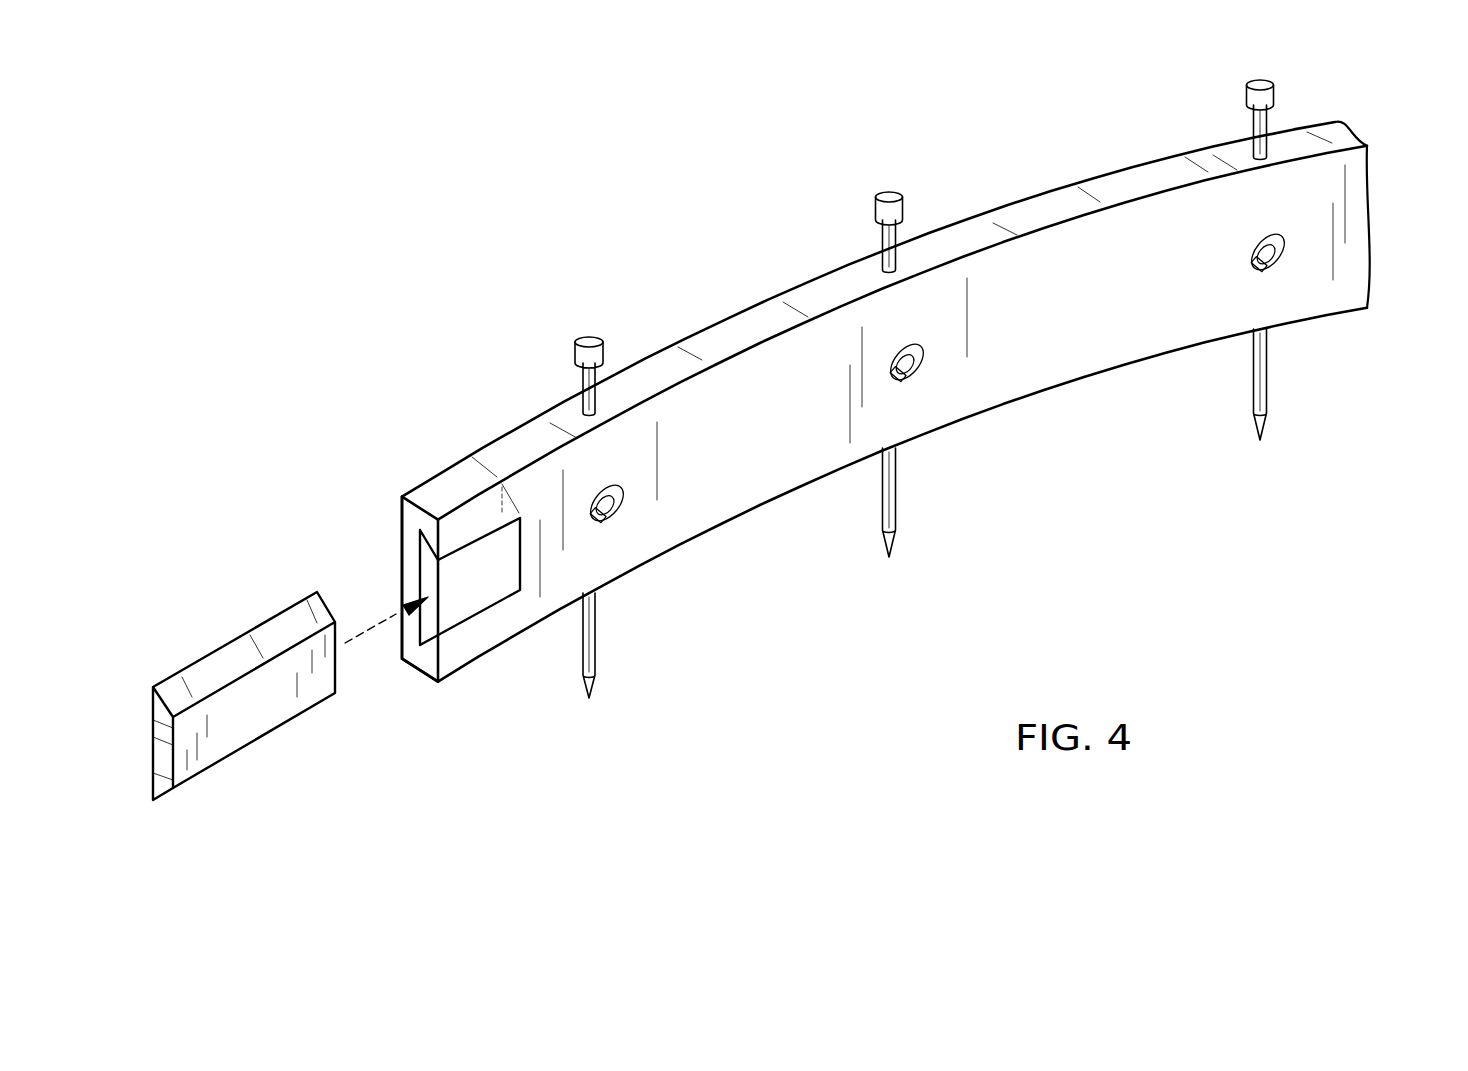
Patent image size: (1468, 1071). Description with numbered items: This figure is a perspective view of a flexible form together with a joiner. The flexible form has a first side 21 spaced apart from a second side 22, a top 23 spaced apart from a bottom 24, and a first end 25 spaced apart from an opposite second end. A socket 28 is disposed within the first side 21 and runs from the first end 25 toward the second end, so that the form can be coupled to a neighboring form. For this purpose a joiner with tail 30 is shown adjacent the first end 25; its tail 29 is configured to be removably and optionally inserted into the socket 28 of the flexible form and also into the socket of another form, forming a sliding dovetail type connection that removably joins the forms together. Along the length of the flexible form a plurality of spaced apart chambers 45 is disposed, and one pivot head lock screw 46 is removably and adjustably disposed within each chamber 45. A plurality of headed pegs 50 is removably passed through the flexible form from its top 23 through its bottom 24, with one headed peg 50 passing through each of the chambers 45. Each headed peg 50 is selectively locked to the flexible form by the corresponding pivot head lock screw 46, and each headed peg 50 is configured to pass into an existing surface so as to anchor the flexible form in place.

The first side 21 is at (1147, 359).
The second side 22 is at (477, 452).
The top 23 is at (1040, 195).
The bottom 24 is at (810, 483).
The first end 25 is at (412, 517).
The socket 28 is at (432, 578).
The tail 29 is at (147, 708).
The joiner with tail 30 is at (240, 637).
The chamber 45 is at (622, 502).
The pivot head lock screw 46 is at (605, 513).
The headed peg 50 is at (586, 338).